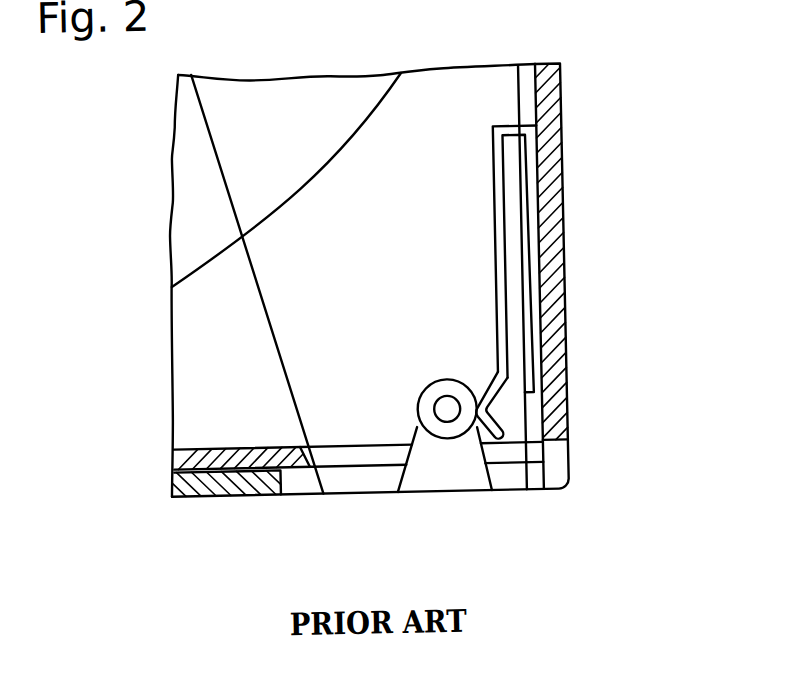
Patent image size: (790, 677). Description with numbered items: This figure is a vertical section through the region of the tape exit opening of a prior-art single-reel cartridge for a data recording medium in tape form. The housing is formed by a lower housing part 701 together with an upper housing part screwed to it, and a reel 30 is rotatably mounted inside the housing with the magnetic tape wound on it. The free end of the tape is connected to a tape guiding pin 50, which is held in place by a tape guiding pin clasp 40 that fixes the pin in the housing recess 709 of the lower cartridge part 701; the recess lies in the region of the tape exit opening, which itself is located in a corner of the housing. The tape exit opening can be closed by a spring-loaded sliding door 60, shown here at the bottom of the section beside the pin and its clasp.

The reel 30 is at (202, 200).
The tape guiding pin clasp 40 is at (524, 225).
The tape guiding pin 50 is at (440, 407).
The sliding door 60 is at (202, 455).
The lower housing part 701 is at (431, 101).
The housing recess 709 is at (440, 445).